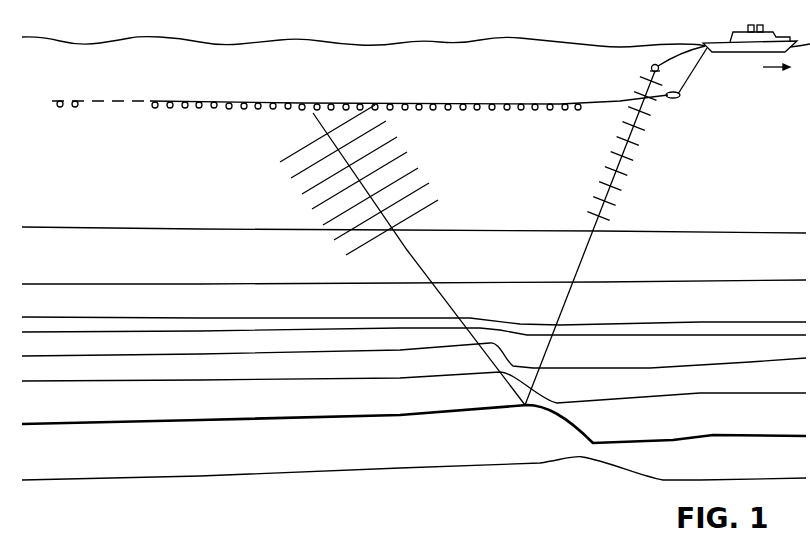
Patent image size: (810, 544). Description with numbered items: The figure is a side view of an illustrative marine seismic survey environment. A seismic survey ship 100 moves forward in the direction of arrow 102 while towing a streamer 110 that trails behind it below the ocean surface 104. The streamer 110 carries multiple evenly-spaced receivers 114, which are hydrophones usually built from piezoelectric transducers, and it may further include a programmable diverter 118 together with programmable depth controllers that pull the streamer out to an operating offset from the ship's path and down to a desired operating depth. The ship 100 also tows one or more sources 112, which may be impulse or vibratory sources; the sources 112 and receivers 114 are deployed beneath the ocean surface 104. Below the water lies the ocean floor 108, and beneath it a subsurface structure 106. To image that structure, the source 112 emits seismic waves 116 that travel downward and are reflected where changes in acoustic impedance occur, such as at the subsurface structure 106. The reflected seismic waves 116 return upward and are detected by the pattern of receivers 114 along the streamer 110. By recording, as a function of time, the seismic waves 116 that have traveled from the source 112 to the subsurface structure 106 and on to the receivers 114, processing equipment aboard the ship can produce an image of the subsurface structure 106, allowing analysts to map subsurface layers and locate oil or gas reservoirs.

The seismic survey ship 100 is at (737, 38).
The arrow 102 is at (778, 83).
The ocean surface 104 is at (448, 43).
The subsurface structure 106 is at (557, 415).
The ocean floor 108 is at (732, 212).
The streamer 110 is at (691, 78).
The source 112 is at (652, 67).
The receivers 114 is at (185, 108).
The seismic waves 116 is at (610, 183).
The programmable diverter 118 is at (678, 100).